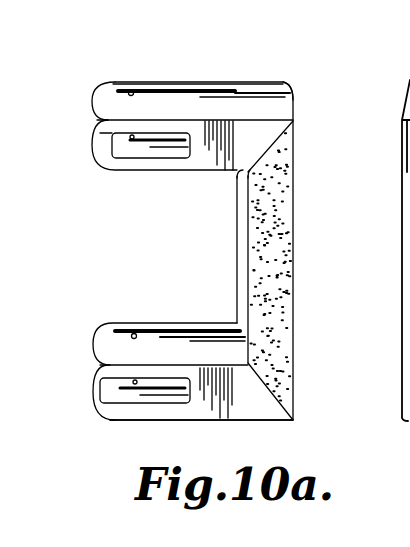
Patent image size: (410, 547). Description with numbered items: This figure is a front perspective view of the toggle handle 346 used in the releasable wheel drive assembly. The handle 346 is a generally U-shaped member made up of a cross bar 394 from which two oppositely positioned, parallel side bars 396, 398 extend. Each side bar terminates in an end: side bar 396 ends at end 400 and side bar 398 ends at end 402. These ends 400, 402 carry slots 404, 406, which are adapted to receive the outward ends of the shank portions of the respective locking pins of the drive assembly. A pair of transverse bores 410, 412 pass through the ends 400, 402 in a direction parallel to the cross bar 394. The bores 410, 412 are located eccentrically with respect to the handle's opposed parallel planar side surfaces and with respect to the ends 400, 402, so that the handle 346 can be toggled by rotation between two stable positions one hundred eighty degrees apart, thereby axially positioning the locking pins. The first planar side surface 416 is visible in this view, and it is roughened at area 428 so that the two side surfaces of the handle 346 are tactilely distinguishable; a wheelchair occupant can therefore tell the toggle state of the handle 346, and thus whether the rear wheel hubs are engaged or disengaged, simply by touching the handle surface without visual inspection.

The handle 346 is at (226, 86).
The cross bar 394 is at (298, 153).
The side bar 396 is at (177, 84).
The side bar 398 is at (255, 406).
The end 400 is at (93, 104).
The end 402 is at (95, 352).
The slot 404 is at (93, 147).
The slot 406 is at (95, 403).
The transverse bore 410 is at (132, 137).
The transverse bore 412 is at (135, 382).
The first planar side surface 416 is at (293, 250).
The roughened area 428 is at (278, 318).